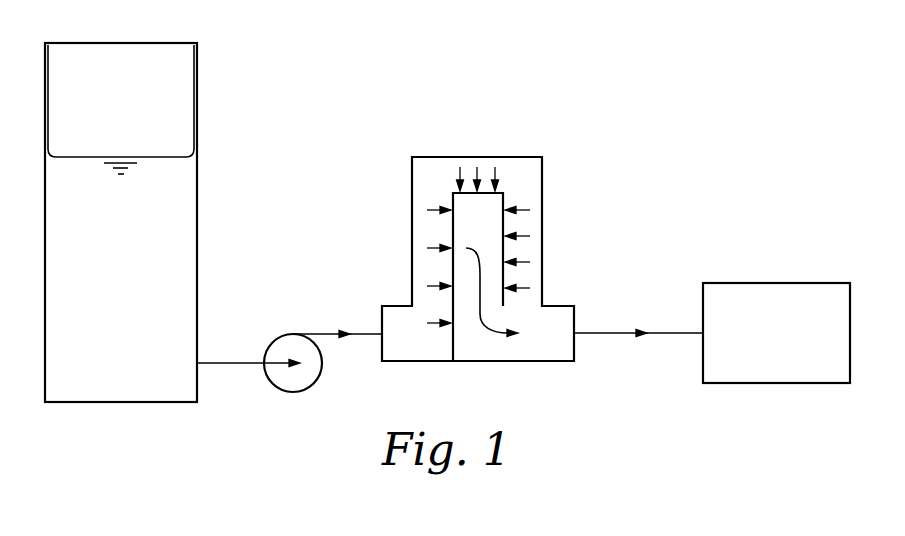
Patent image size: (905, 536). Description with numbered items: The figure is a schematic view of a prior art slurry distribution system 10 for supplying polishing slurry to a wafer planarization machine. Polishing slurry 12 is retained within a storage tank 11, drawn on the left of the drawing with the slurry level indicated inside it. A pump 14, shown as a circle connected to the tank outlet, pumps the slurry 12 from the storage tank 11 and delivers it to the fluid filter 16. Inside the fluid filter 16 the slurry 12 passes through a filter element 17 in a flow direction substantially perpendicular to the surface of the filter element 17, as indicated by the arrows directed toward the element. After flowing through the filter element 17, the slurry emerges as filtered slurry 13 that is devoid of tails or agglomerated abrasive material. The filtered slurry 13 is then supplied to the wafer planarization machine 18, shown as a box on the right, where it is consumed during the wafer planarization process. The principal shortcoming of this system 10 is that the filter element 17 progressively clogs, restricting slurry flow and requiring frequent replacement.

The slurry distribution system 10 is at (643, 70).
The storage tank 11 is at (148, 43).
The polishing slurry 12 is at (128, 278).
The filtered slurry 13 is at (555, 348).
The pump 14 is at (283, 334).
The fluid filter 16 is at (432, 157).
The filter element 17 is at (503, 193).
The wafer planarization machine 18 is at (793, 343).